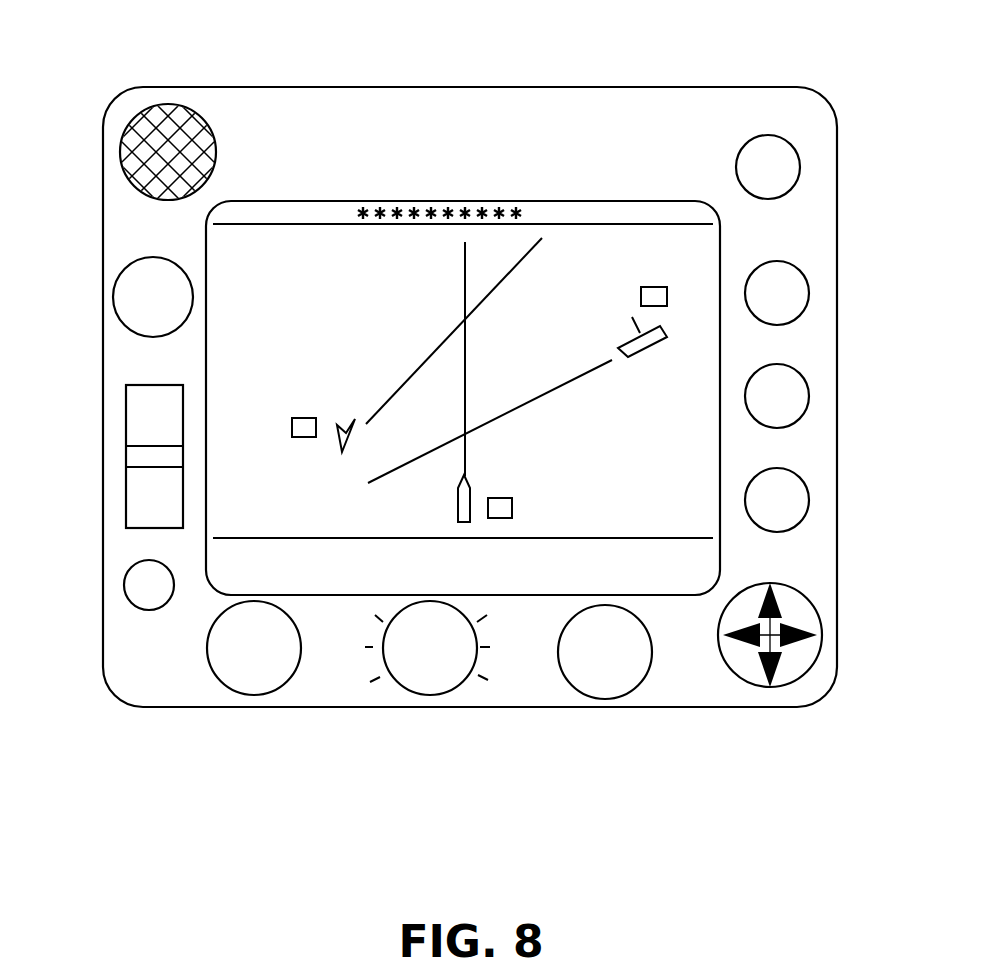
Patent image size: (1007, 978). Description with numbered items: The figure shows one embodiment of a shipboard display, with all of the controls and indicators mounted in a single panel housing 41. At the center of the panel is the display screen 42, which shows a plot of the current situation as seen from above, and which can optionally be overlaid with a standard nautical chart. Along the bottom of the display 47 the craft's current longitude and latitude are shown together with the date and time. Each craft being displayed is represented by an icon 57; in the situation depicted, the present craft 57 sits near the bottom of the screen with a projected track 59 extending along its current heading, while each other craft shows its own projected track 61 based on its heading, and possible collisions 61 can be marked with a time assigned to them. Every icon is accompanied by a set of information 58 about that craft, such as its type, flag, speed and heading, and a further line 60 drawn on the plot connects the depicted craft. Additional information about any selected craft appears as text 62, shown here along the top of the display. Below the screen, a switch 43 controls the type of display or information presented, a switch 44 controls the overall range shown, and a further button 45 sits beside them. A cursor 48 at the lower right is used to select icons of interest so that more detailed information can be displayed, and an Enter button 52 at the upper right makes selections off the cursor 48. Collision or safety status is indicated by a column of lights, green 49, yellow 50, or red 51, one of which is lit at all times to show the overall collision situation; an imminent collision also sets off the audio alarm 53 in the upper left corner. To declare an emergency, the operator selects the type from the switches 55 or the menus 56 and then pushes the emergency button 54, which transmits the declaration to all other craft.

The housing 41 is at (678, 100).
The display screen 42 is at (612, 240).
The switch 43 is at (245, 682).
The switch 44 is at (427, 702).
The squawk button 45 is at (597, 703).
The bottom of the display 47 is at (647, 583).
The cursor 48 is at (782, 695).
The green light 49 is at (810, 523).
The yellow light 50 is at (803, 430).
The red light 51 is at (810, 317).
The Enter button 52 is at (785, 137).
The audio alarm 53 is at (162, 98).
The emergency button 54 is at (132, 252).
The switches 55 is at (123, 535).
The menus 56 is at (149, 615).
The icon 57 is at (452, 508).
The set of information 58 is at (300, 413).
The projected track 59 is at (457, 252).
The track line 60 is at (515, 278).
The projected track 61 is at (457, 318).
The text 62 is at (483, 203).